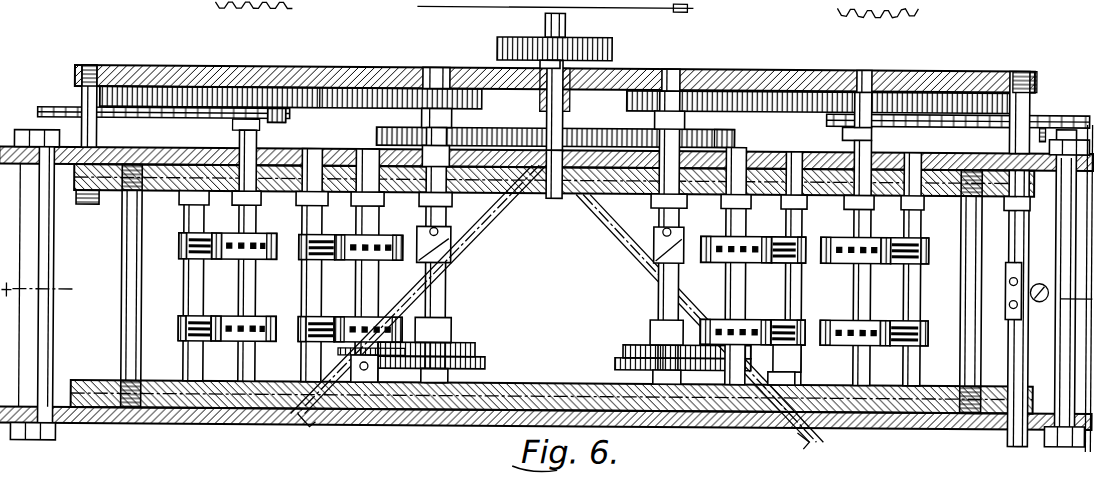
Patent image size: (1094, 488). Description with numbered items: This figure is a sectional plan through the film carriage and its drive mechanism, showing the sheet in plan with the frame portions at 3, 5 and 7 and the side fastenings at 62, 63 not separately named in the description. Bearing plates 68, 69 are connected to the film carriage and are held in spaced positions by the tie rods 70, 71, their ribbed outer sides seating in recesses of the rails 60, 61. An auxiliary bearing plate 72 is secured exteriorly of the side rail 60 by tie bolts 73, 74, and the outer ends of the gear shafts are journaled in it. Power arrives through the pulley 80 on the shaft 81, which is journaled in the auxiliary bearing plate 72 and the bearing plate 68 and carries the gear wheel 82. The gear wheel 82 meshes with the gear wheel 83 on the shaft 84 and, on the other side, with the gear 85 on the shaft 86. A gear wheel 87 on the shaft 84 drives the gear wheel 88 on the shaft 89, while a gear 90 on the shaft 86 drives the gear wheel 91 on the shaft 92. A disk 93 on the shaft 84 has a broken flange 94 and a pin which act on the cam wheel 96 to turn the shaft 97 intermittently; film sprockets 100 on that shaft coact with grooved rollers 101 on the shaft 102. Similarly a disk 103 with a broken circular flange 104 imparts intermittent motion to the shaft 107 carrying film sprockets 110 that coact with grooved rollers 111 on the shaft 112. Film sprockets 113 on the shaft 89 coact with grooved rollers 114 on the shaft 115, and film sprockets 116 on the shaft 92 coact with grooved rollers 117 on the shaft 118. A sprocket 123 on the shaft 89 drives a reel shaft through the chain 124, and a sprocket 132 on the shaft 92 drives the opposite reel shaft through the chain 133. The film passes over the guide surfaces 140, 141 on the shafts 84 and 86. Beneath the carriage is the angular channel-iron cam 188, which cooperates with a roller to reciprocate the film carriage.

The side plate 3 is at (1076, 288).
The frame member 5 is at (38, 290).
The hub bracket 7 is at (549, 363).
The rail 60 is at (1073, 185).
The rail 61 is at (1063, 443).
The side bolt 62 is at (1058, 347).
The side bolt 63 is at (50, 252).
The bearing plate 68 is at (114, 192).
The bearing plate 69 is at (85, 380).
The tie rod 70 is at (963, 364).
The tie rod 71 is at (123, 330).
The auxiliary bearing plate 72 is at (365, 66).
The tie bolt 73 is at (1032, 99).
The tie bolt 74 is at (82, 93).
The pulley 80 is at (614, 45).
The shaft 81 is at (570, 99).
The gear wheel 82 is at (560, 195).
The gear wheel 83 is at (735, 138).
The shaft 84 is at (680, 68).
The gear 85 is at (378, 130).
The shaft 86 is at (445, 65).
The gear wheel 87 is at (748, 66).
The gear wheel 88 is at (822, 66).
The shaft 89 is at (874, 66).
The gear 90 is at (426, 86).
The gear wheel 91 is at (362, 66).
The shaft 92 is at (318, 65).
The disk 93 is at (617, 360).
The broken flange 94 is at (628, 342).
The cam wheel 96 is at (733, 369).
The shaft 97 is at (742, 222).
The film sprocket 100 is at (765, 318).
The grooved roller 101 is at (813, 316).
The shaft 102 is at (806, 220).
The disk 103 is at (487, 360).
The broken circular flange 104 is at (474, 345).
The shaft 107 is at (364, 215).
The film sprocket 110 is at (338, 315).
The grooved roller 111 is at (300, 316).
The shaft 112 is at (306, 213).
The film sprocket 113 is at (887, 318).
The grooved roller 114 is at (930, 318).
The shaft 115 is at (924, 220).
The film sprocket 116 is at (220, 316).
The grooved roller 117 is at (182, 313).
The shaft 118 is at (190, 213).
The sprocket 123 is at (875, 127).
The chain 124 is at (925, 121).
The sprocket 132 is at (277, 122).
The chain 133 is at (150, 119).
The guide surface 140 is at (452, 260).
The guide surface 141 is at (652, 320).
The cam 188 is at (499, 231).